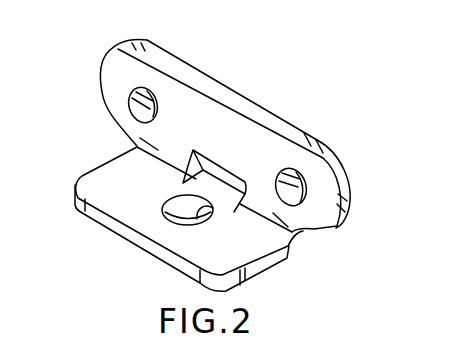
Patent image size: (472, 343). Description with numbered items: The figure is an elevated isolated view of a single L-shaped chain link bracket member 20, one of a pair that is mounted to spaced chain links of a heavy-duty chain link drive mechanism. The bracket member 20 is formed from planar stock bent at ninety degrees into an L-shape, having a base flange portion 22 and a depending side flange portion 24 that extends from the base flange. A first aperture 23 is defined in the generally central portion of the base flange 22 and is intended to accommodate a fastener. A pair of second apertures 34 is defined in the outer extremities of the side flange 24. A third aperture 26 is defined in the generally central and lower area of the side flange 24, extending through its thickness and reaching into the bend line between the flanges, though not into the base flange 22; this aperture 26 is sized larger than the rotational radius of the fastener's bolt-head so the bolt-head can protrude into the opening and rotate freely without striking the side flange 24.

The chain link bracket member 20 is at (213, 148).
The base flange portion 22 is at (189, 219).
The first aperture 23 is at (216, 209).
The side flange portion 24 is at (213, 150).
The aperture 26 is at (219, 172).
The second apertures 34 is at (129, 116).